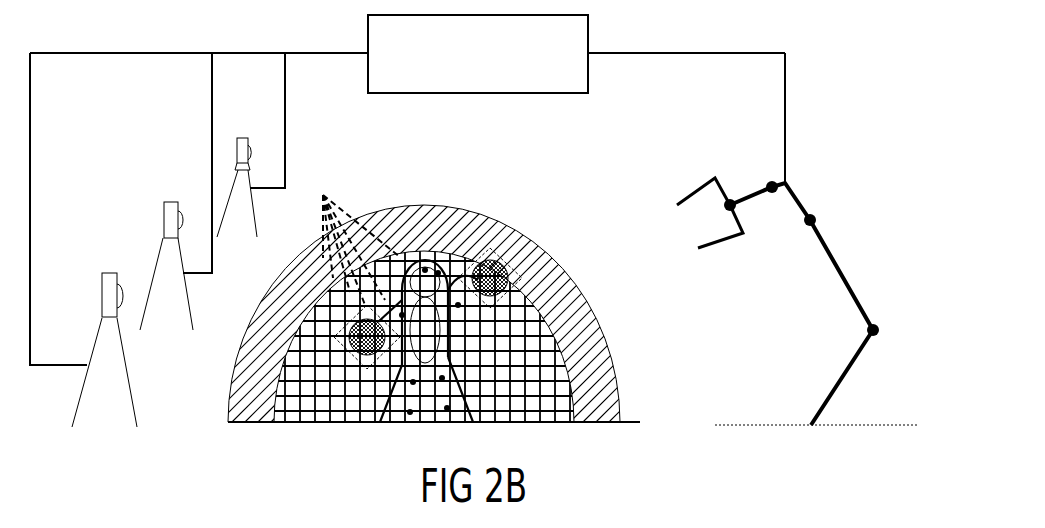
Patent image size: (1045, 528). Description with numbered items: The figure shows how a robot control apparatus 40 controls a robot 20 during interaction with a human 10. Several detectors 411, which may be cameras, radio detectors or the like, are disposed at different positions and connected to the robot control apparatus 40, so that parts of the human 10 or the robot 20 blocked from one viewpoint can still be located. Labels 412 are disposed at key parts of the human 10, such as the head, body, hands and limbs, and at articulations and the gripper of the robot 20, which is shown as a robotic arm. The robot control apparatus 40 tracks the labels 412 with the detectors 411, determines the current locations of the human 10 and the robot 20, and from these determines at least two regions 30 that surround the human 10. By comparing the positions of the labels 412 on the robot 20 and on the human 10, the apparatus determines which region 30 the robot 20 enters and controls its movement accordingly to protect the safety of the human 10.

The human 10 is at (437, 281).
The robot 20 is at (847, 232).
The regions 30 is at (355, 231).
The robot control apparatus 40 is at (492, 66).
The detector 411 is at (108, 273).
The label 412 is at (462, 218).